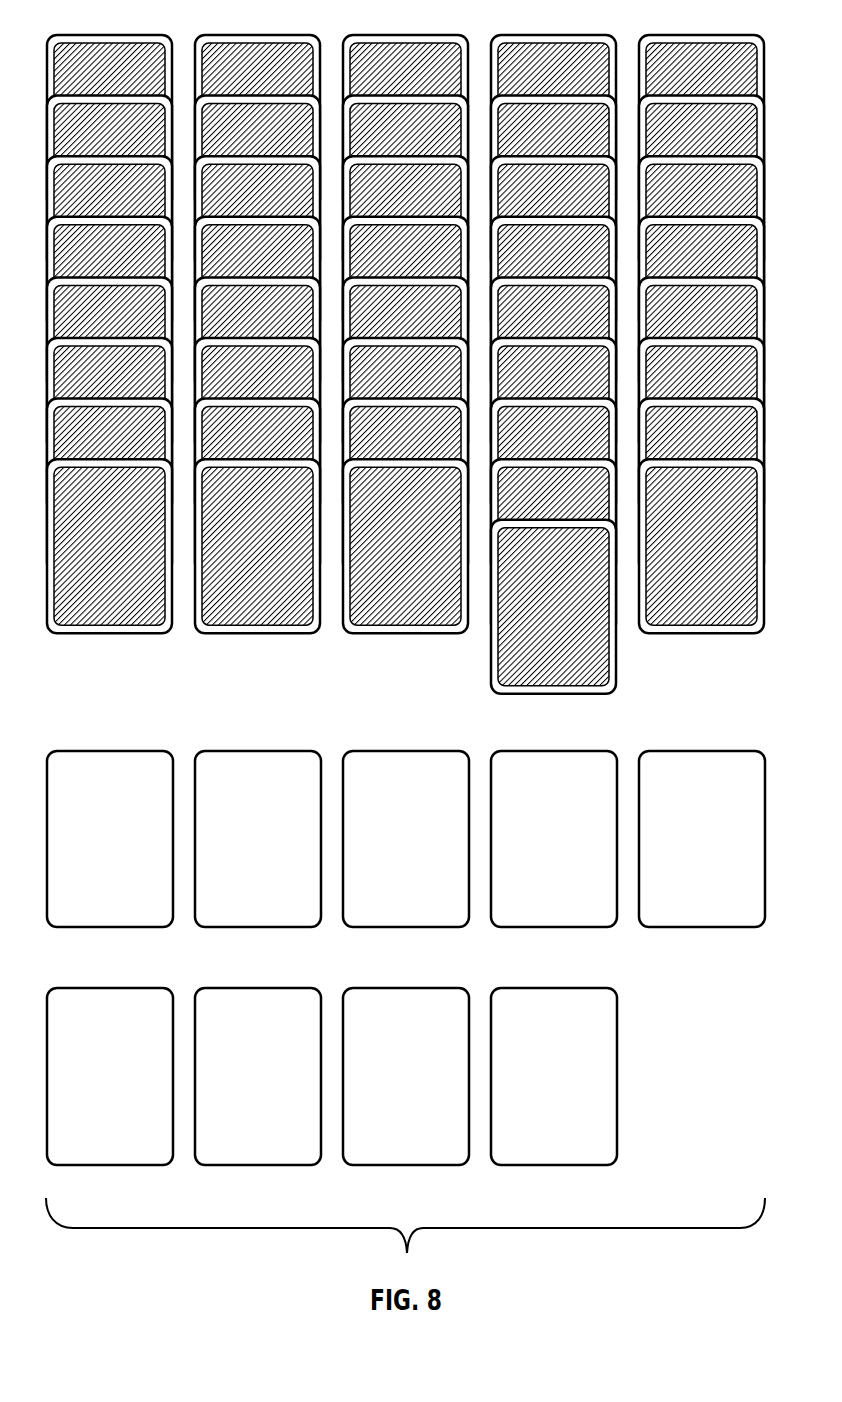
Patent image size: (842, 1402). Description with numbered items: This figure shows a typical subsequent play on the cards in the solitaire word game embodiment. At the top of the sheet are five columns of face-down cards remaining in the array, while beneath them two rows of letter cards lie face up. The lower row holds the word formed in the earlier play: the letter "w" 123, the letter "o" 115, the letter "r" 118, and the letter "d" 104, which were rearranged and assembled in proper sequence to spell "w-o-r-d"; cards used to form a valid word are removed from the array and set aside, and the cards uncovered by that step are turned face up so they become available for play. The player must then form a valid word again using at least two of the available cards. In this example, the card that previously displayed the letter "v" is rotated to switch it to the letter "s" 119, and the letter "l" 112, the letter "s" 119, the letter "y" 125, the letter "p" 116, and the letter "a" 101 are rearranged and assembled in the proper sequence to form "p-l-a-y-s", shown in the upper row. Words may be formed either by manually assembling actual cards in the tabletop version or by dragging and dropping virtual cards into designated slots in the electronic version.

The letter "p" 116 is at (108, 767).
The letter "l" 112 is at (256, 767).
The letter "a" 101 is at (404, 767).
The letter "y" 125 is at (552, 767).
The letter "s" 119 is at (700, 767).
The letter "w" 123 is at (108, 1005).
The letter "o" 115 is at (256, 1005).
The letter "r" 118 is at (404, 1005).
The letter "d" 104 is at (552, 1005).